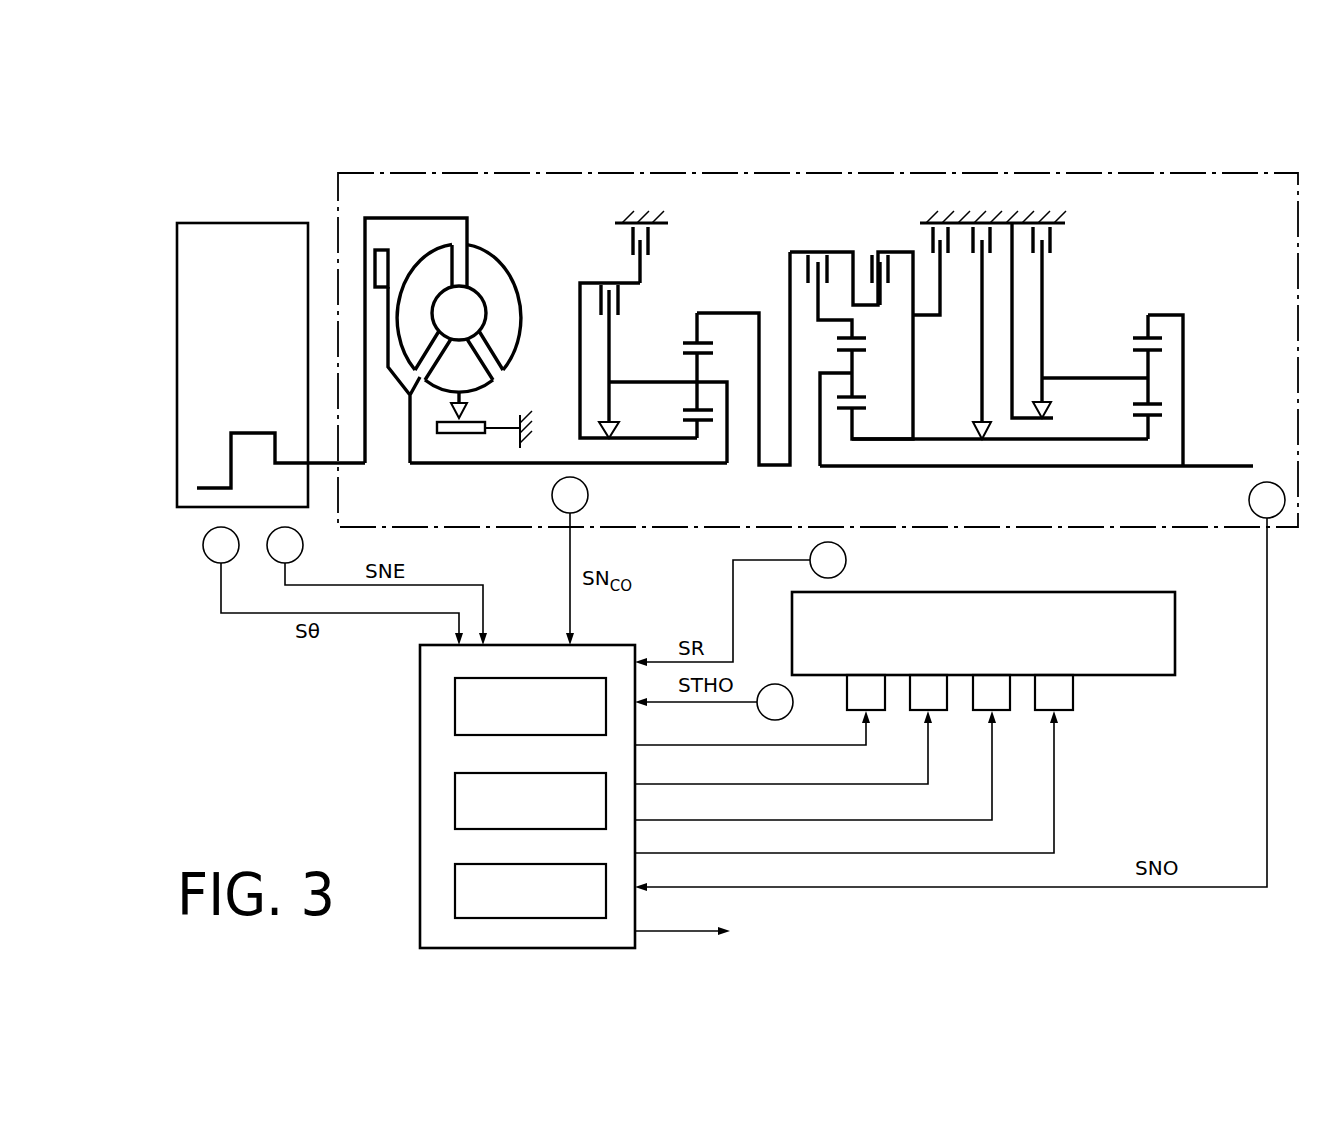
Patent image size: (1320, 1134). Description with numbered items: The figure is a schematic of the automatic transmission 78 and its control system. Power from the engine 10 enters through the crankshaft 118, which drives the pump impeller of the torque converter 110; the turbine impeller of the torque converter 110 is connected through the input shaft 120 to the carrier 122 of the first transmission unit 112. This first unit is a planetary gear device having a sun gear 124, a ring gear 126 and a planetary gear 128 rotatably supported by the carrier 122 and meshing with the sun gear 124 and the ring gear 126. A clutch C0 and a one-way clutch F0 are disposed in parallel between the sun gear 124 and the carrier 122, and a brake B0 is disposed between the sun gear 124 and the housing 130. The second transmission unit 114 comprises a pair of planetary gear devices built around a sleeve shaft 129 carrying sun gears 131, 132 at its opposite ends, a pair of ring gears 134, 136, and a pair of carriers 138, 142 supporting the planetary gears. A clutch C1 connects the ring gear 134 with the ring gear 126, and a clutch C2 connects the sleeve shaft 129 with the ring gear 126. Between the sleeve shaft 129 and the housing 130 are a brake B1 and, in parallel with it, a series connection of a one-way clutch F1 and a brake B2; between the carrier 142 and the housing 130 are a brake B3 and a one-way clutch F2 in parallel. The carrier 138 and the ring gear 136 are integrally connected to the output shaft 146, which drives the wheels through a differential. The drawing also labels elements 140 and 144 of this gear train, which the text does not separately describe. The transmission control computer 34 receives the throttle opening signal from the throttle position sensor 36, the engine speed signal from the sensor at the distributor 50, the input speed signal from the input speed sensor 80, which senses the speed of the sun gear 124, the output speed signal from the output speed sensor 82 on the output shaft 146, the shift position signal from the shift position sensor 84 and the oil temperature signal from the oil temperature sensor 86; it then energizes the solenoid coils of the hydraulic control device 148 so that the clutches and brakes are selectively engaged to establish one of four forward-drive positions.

The engine 10 is at (247, 235).
The crankshaft 118 is at (212, 487).
The automatic transmission 78 is at (440, 172).
The torque converter 110 is at (493, 216).
The input shaft 120 is at (500, 466).
The housing 130 is at (638, 212).
The first transmission unit 112 is at (697, 225).
The brake B0 is at (630, 240).
The clutch C0 is at (620, 295).
The carrier 122 is at (653, 382).
The ring gear 126 is at (688, 338).
The planetary gear 128 is at (688, 408).
The one-way clutch F0 is at (617, 425).
The sun gear 124 is at (706, 425).
The second transmission unit 114 is at (1117, 218).
The clutch C1 is at (790, 263).
The clutch C2 is at (870, 270).
The brake B1 is at (933, 240).
The brake B2 is at (972, 244).
The brake B3 is at (1055, 238).
The one-way clutch F1 is at (987, 423).
The one-way clutch F2 is at (1045, 410).
The ring gear 134 is at (862, 330).
The carrier 138 is at (862, 370).
The sun gear 131 is at (842, 410).
The sleeve shaft 129 is at (877, 443).
The sun gear 140 is at (877, 385).
The sun gear 132 is at (1137, 420).
The ring gear 136 is at (1138, 337).
The carrier 142 is at (1102, 374).
The ring gear / output member 144 is at (1160, 395).
The output shaft 146 is at (1220, 466).
The throttle position sensor 36 is at (213, 545).
The distributor 50 is at (277, 545).
The input speed sensor 80 is at (555, 497).
The output speed sensor 82 is at (1254, 512).
The shift position sensor 84 is at (846, 560).
The oil temperature sensor 86 is at (773, 694).
The transmission control computer 34 is at (423, 745).
The hydraulic control device 148 is at (1130, 670).